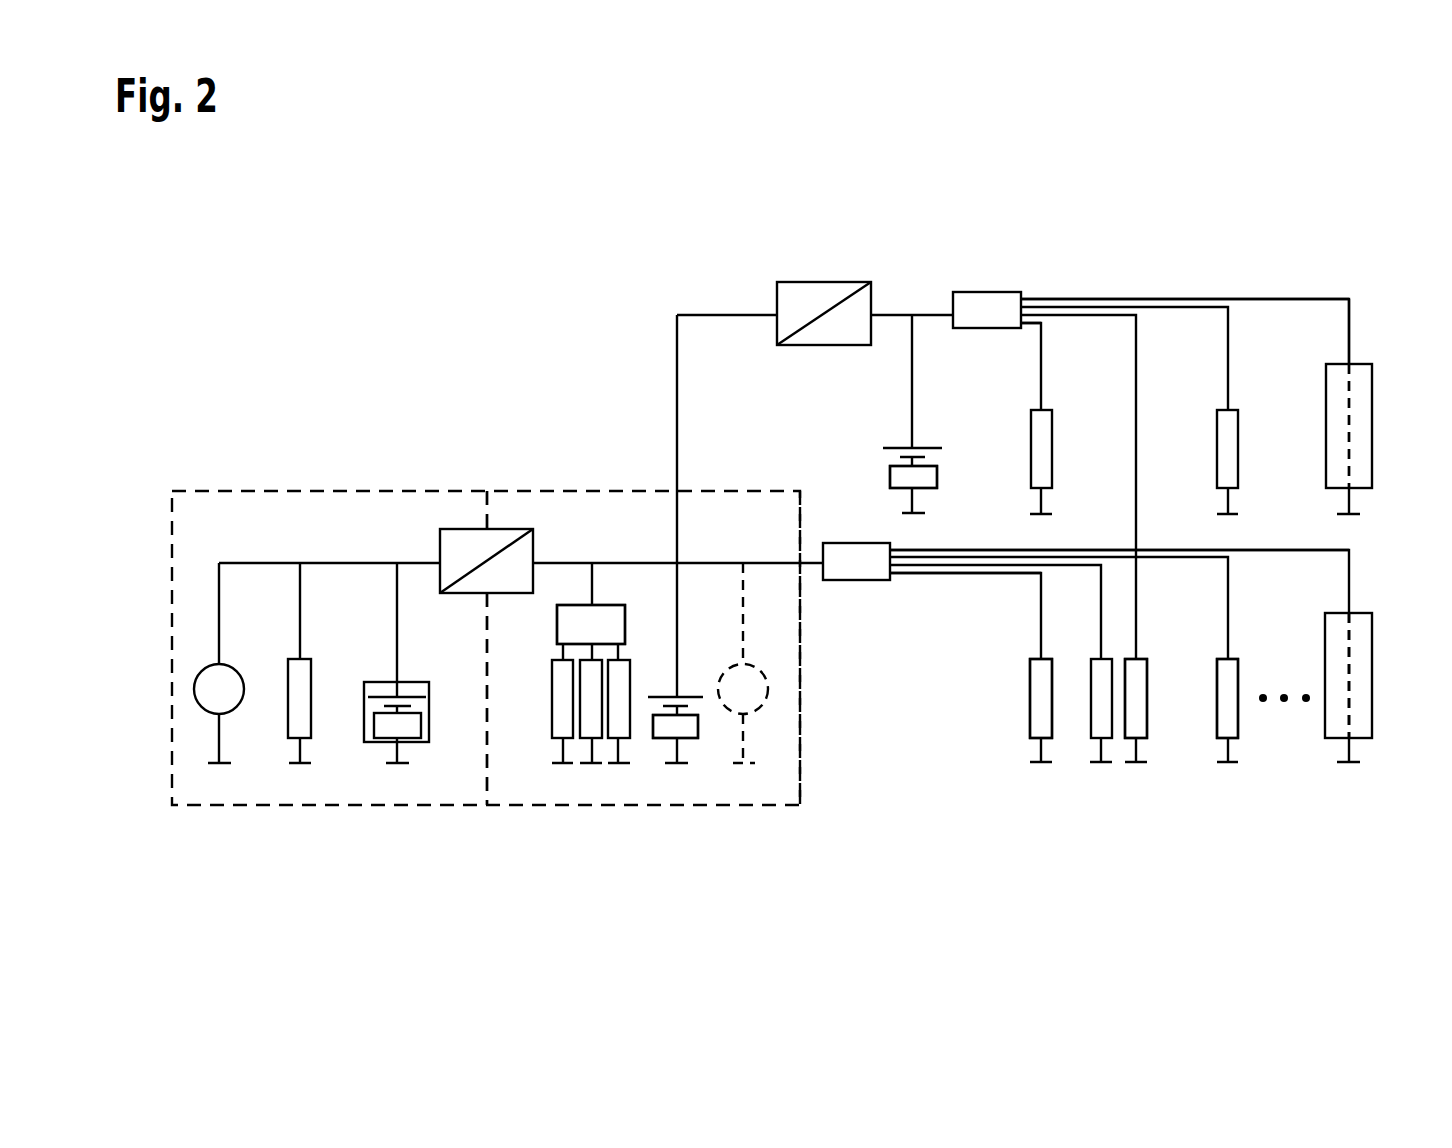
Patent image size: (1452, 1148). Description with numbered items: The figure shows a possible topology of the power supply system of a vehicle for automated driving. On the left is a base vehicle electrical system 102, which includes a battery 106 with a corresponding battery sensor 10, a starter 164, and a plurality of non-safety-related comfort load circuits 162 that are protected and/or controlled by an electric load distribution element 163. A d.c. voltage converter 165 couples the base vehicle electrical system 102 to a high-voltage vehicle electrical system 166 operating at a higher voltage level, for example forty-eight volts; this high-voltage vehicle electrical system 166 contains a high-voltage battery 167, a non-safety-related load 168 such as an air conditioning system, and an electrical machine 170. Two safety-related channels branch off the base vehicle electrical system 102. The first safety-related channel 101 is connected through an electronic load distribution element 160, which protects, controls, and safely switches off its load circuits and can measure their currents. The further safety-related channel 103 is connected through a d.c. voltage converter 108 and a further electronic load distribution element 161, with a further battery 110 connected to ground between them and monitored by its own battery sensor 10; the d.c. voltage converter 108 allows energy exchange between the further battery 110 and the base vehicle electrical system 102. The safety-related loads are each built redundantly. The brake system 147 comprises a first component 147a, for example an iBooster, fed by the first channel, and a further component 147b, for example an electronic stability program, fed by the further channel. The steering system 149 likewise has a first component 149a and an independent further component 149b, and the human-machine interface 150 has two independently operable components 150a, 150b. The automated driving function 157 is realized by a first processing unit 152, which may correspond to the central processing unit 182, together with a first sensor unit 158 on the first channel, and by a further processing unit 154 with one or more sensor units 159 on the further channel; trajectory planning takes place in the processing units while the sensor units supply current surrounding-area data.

The battery sensor 10 is at (698, 722).
The first safety-related channel 101 is at (944, 623).
The base vehicle electrical system 102 is at (566, 548).
The further safety-related channel 103 is at (1040, 283).
The battery 106 is at (653, 722).
The d.c. voltage converter 108 is at (824, 282).
The further battery 110 is at (897, 446).
The brake system 147 is at (1021, 833).
The first component of brake system 147a is at (1030, 722).
The further component of brake system 147b is at (1031, 473).
The steering system 149 is at (1150, 833).
The first component of steering system 149a is at (1091, 722).
The further component of steering system 149b is at (1148, 722).
The human-machine interface 150 is at (1279, 833).
The first component of human-machine interface 150a is at (1238, 722).
The further component of human-machine interface 150b is at (1217, 473).
The first processing unit 152 is at (1365, 657).
The further processing unit 154 is at (1365, 450).
The automated driving function 157 is at (1393, 287).
The first sensor unit 158 is at (1333, 702).
The sensor unit 159 is at (1333, 388).
The electronic load distribution element 160 is at (857, 580).
The further electronic load distribution element 161 is at (987, 292).
The comfort load circuits 162 is at (552, 722).
The electric load distribution element 163 is at (615, 605).
The starter 164 is at (760, 707).
The d.c. voltage converter 165 is at (456, 529).
The high-voltage vehicle electrical system 166 is at (327, 563).
The high-voltage battery 167 is at (429, 722).
The non-safety-related load 168 is at (311, 722).
The electrical machine 170 is at (233, 707).
The central processing unit 182 is at (1386, 719).